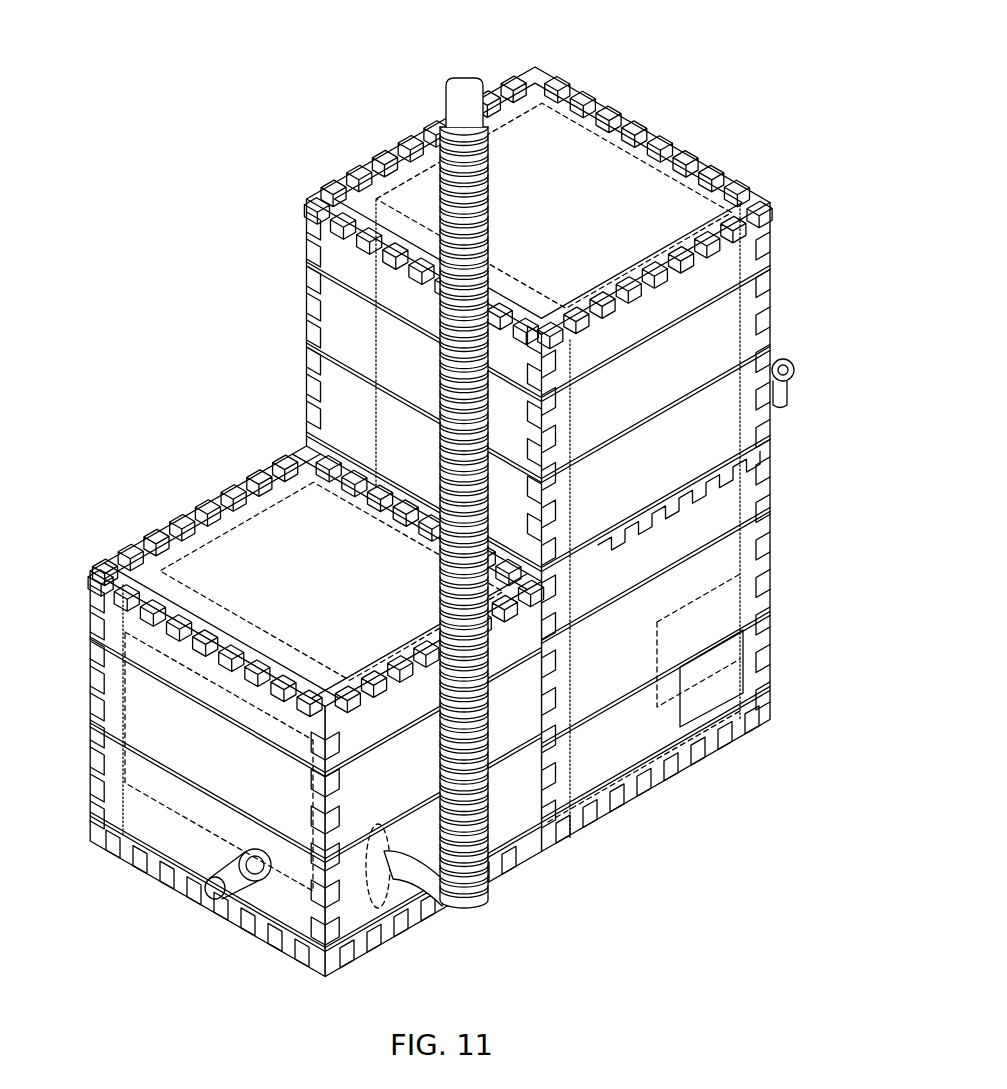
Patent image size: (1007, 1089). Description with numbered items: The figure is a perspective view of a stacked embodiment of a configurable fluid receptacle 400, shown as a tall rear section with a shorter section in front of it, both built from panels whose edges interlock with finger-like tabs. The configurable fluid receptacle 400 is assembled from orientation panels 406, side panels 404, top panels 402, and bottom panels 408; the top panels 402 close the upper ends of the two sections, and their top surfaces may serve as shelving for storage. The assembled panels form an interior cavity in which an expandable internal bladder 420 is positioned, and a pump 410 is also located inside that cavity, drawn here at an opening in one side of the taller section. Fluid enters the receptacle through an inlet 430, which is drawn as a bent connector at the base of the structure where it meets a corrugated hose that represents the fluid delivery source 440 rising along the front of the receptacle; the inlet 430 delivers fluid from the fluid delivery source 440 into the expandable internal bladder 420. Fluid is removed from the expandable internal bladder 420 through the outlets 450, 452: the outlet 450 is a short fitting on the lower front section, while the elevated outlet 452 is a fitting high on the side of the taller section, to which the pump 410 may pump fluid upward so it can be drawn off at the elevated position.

The configurable fluid receptacle 400 is at (435, 501).
The top panels 402 is at (385, 190).
The side panels 404 is at (760, 298).
The orientation panels 406 is at (427, 722).
The bottom panels 408 is at (652, 820).
The pump 410 is at (708, 693).
The expandable internal bladder 420 is at (758, 340).
The inlet 430 is at (383, 875).
The fluid delivery source 440 is at (485, 906).
The outlet 450 is at (205, 887).
The elevated outlet 452 is at (806, 397).